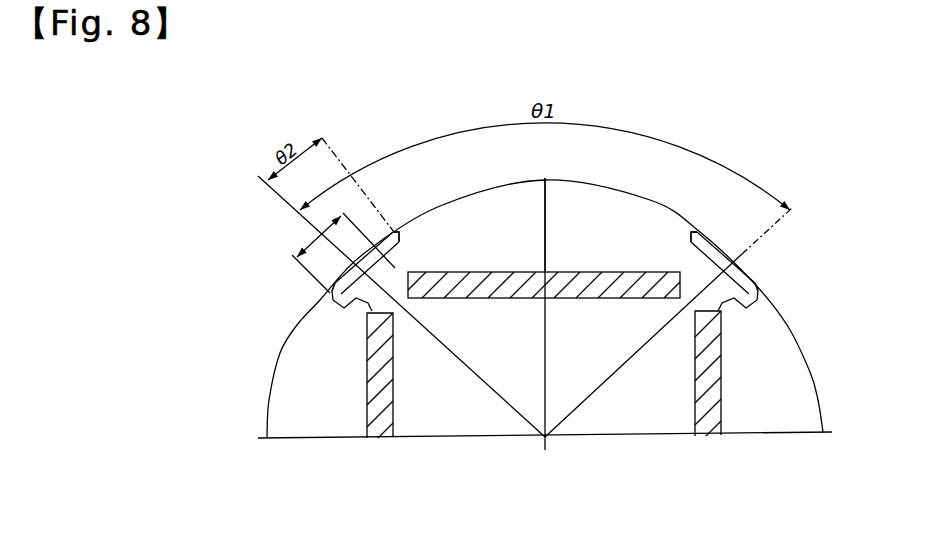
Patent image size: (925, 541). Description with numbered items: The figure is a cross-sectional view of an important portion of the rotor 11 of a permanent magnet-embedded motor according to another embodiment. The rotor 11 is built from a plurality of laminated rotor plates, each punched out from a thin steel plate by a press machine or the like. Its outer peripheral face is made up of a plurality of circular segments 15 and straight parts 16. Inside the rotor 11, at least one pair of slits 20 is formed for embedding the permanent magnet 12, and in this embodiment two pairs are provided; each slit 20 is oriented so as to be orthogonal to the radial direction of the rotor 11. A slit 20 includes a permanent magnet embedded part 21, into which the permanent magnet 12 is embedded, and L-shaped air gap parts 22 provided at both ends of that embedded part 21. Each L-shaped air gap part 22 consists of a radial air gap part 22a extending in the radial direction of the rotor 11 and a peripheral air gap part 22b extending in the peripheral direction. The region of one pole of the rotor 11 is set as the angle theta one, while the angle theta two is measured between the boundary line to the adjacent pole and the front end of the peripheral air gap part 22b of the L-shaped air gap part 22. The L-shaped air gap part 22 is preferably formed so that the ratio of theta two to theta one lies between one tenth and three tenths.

The rotor 11 is at (510, 205).
The permanent magnet 12 is at (598, 271).
The circular segment 15 is at (439, 205).
The straight part 16 is at (848, 258).
The slit 20 is at (623, 290).
The permanent magnet embedded part 21 is at (518, 298).
The L-shaped air gap part 22 is at (697, 248).
The radial air gap part 22a is at (331, 281).
The peripheral air gap part 22b is at (394, 230).